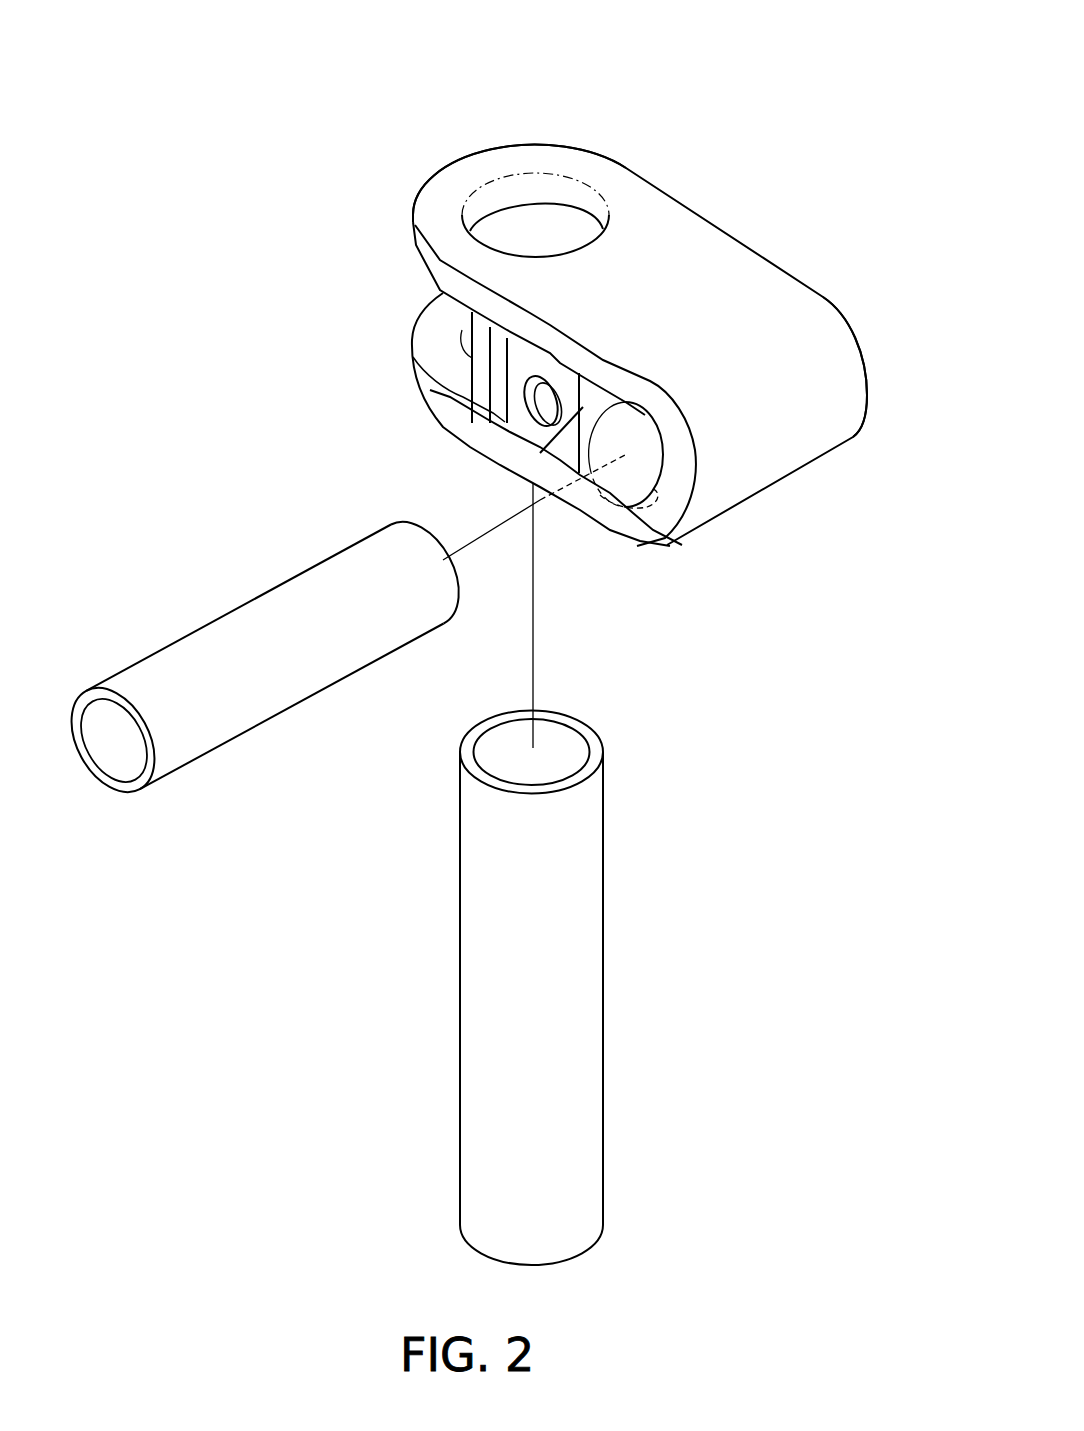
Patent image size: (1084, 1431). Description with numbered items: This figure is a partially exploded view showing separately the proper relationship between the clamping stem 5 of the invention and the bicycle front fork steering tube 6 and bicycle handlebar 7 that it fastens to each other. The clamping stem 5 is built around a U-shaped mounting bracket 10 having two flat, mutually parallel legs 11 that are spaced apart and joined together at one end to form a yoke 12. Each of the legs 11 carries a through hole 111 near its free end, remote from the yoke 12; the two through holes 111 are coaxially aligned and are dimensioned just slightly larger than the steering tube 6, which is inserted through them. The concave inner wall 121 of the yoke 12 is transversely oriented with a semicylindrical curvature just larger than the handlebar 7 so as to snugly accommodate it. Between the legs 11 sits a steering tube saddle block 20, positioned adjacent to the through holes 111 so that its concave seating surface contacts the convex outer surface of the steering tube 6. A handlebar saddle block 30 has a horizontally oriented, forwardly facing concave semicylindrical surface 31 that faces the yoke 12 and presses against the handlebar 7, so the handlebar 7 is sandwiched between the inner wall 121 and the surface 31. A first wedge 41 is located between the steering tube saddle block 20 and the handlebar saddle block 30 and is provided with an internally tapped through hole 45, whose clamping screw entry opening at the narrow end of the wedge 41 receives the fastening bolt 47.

The clamping stem 5 is at (783, 193).
The mounting bracket 10 is at (395, 232).
The legs 11 is at (545, 162).
The through hole 111 is at (493, 195).
The steering tube saddle block 20 is at (482, 352).
The first wedge 41 is at (515, 377).
The internally tapped through hole 45 is at (507, 420).
The handlebar saddle block 30 is at (540, 453).
The fastening bolt 47 is at (538, 380).
The concave semicylindrical surface 31 is at (608, 478).
The concave inner wall 121 is at (650, 510).
The yoke 12 is at (780, 453).
The bicycle handlebar 7 is at (273, 700).
The fork steering tube 6 is at (580, 1045).